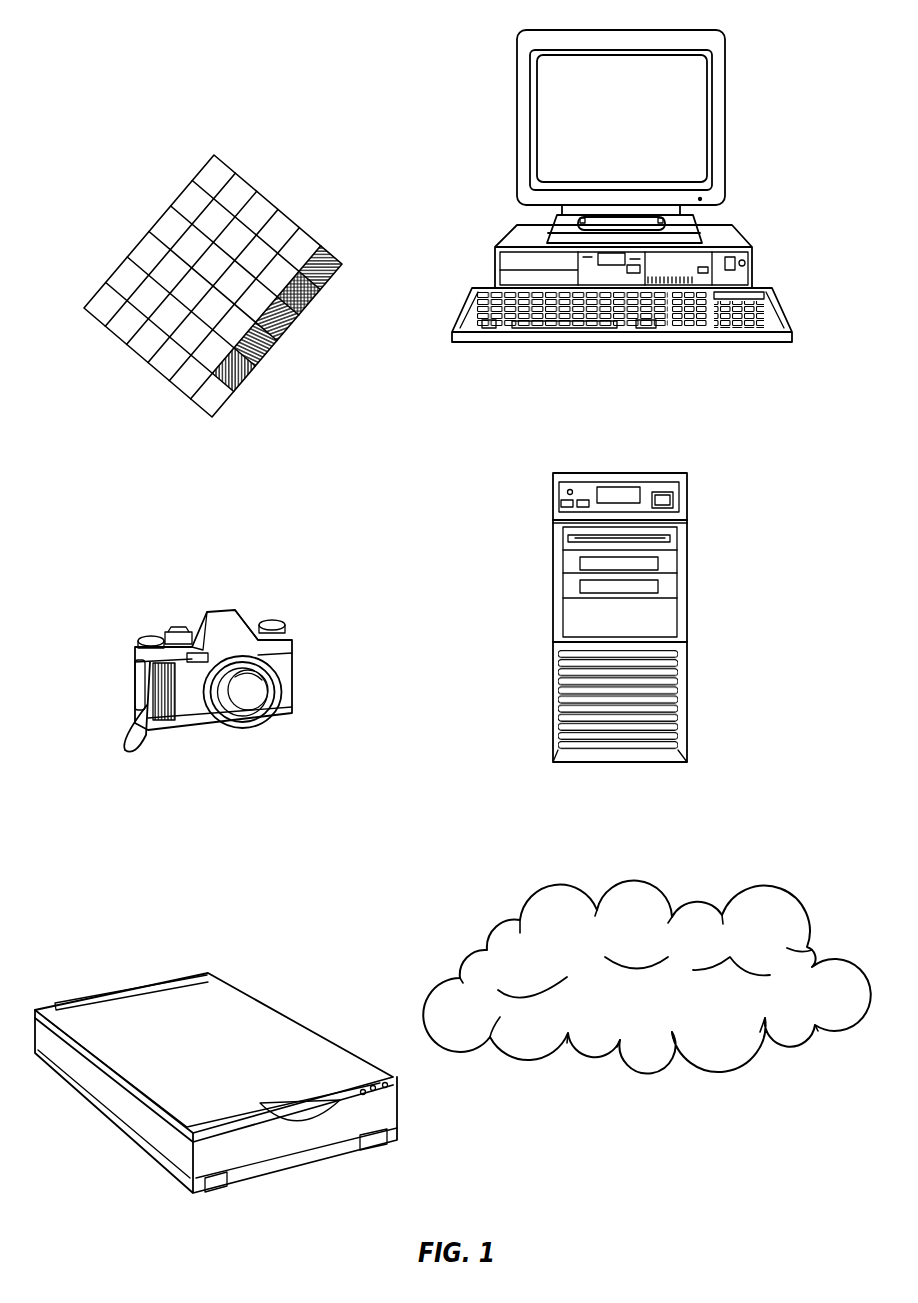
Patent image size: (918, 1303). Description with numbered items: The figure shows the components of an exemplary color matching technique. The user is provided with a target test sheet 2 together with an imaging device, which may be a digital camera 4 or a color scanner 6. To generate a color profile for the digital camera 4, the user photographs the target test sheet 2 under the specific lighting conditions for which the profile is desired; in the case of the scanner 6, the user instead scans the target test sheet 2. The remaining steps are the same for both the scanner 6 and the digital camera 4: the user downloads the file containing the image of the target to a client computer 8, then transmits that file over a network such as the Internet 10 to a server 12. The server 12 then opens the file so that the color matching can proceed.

The target test sheet 2 is at (183, 190).
The digital camera 4 is at (188, 608).
The color scanner 6 is at (287, 1018).
The client computer 8 is at (678, 31).
The Internet 10 is at (668, 892).
The server 12 is at (648, 473).